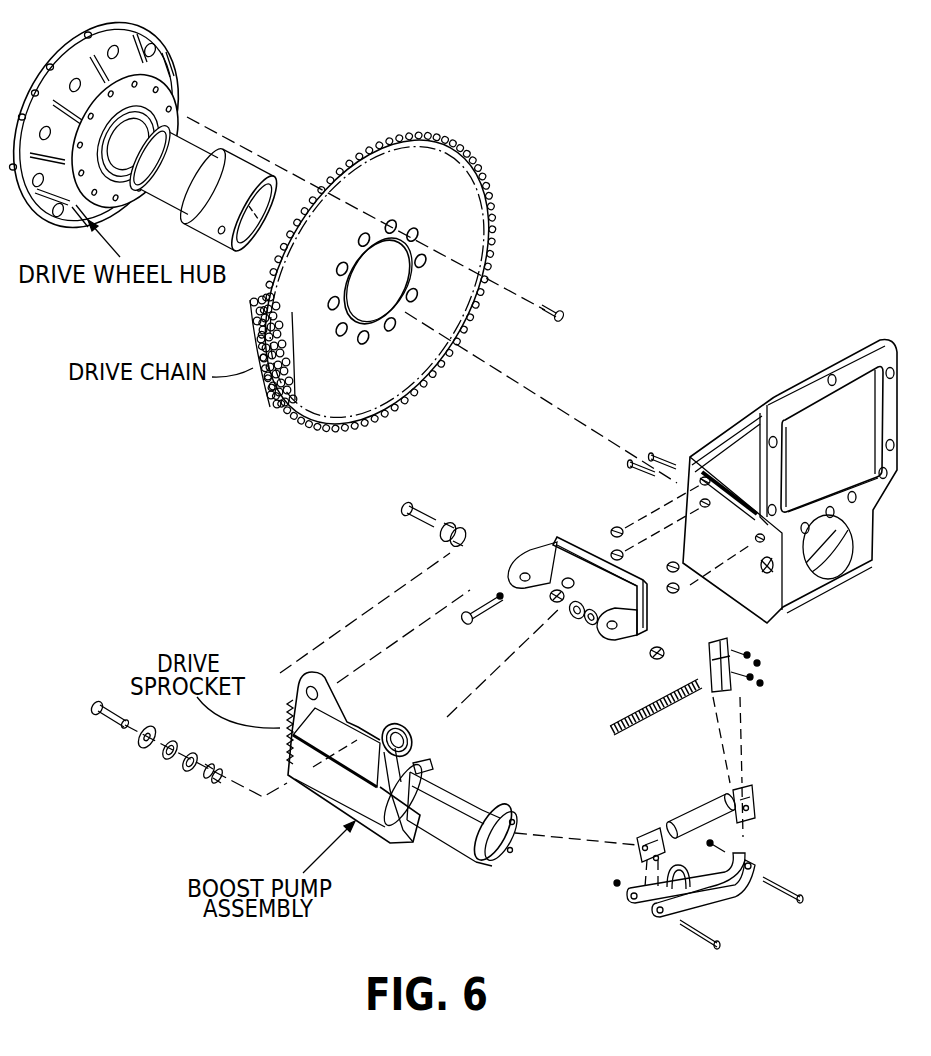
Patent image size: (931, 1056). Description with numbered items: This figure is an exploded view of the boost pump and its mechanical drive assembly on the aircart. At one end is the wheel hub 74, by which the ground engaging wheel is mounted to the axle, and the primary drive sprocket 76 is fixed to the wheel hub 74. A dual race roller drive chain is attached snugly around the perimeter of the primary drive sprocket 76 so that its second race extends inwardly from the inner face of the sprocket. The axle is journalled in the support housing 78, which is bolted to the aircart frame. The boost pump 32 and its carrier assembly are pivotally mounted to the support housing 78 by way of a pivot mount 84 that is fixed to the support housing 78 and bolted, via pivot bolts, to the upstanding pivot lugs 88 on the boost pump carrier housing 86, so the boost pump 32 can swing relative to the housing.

The wheel hub 74 is at (170, 54).
The primary drive sprocket 76 is at (463, 183).
The support housing 78 is at (745, 455).
The pivot mount 84 is at (547, 547).
The boost pump carrier housing 86 is at (325, 775).
The pivot lugs 88 is at (415, 740).
The boost pump 32 is at (452, 825).